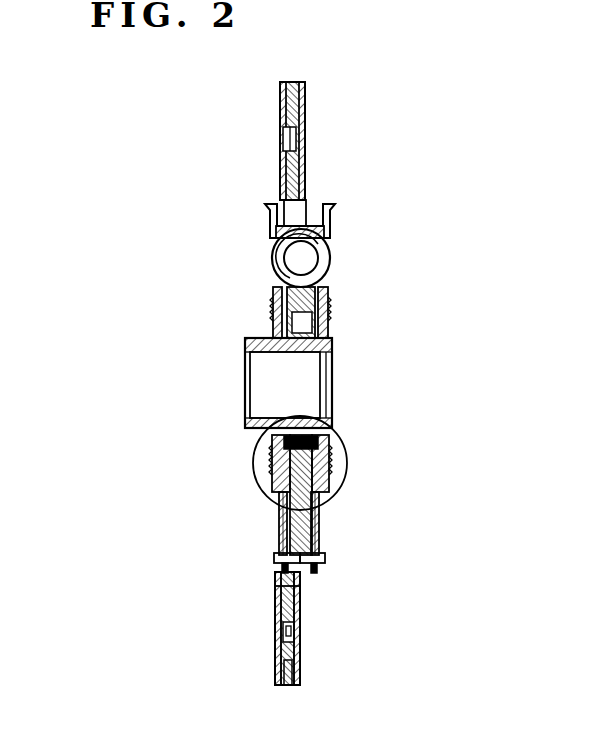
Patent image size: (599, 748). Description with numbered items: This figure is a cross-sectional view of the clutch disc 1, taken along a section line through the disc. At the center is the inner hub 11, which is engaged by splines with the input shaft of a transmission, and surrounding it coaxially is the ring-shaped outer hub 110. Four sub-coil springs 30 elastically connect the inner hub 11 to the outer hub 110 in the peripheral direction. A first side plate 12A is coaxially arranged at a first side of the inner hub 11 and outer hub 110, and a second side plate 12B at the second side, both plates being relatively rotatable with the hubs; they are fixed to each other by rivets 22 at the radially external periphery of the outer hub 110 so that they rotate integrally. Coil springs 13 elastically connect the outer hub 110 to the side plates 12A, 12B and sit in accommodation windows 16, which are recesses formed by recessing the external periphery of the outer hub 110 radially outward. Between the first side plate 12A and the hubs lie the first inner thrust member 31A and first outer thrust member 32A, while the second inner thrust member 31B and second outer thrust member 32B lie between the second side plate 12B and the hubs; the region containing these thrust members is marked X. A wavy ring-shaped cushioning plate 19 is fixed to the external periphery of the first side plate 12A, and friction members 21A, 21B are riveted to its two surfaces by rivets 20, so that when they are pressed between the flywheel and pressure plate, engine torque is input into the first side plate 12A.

The clutch disc 1 is at (316, 108).
The accommodation window 16 is at (303, 213).
The coil spring 13 is at (275, 258).
The inner hub 11 is at (333, 372).
The sub-coil spring 30 is at (247, 400).
The first inner thrust member 31A is at (272, 433).
The second inner thrust member 31B is at (330, 408).
The first outer thrust member 32A is at (275, 470).
The second outer thrust member 32B is at (328, 485).
The enlarged region X is at (347, 458).
The first side plate 12A is at (278, 523).
The second side plate 12B is at (330, 556).
The outer hub 110 is at (277, 545).
The rivet 22 is at (333, 570).
The rivet 20 is at (300, 635).
The friction member 21A is at (277, 663).
The friction member 21B is at (300, 673).
The cushioning plate 19 is at (287, 685).